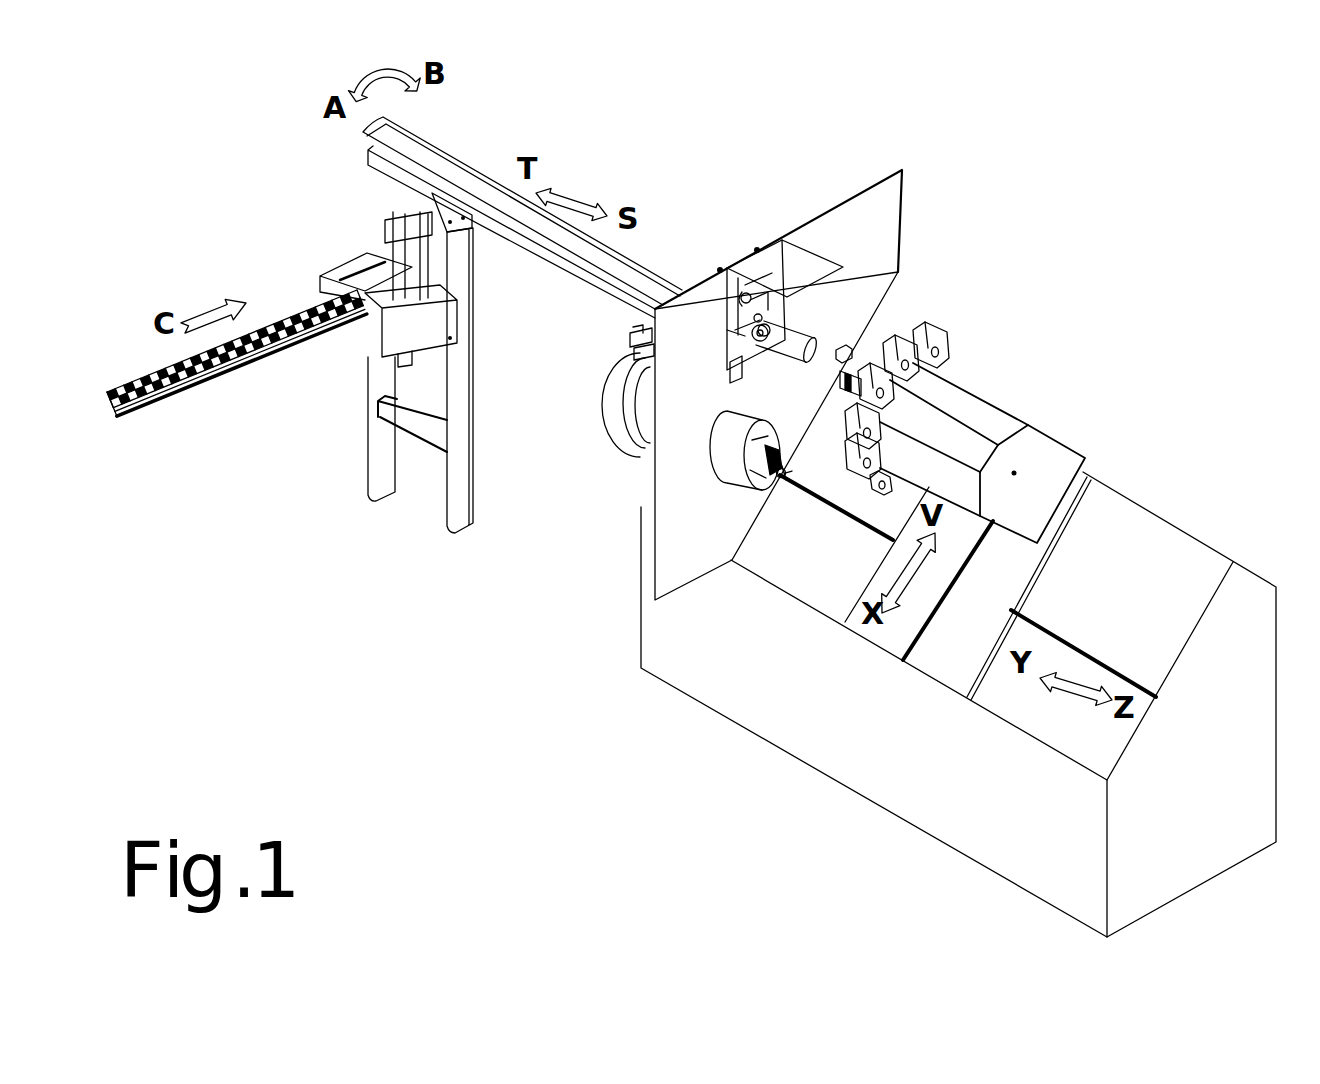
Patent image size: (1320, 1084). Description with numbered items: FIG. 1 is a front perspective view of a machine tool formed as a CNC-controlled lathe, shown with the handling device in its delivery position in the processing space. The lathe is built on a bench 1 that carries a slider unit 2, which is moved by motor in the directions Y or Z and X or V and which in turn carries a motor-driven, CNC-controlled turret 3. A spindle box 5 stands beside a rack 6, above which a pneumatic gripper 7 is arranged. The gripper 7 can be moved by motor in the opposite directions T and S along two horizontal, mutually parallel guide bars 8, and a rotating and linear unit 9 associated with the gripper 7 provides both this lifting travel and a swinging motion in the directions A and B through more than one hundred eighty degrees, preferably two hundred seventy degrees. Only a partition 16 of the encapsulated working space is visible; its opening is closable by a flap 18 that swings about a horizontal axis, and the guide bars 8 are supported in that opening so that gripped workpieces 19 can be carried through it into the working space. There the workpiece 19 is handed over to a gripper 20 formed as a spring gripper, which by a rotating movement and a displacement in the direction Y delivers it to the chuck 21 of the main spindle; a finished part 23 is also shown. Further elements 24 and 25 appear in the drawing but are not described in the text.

The bench 1 is at (1098, 568).
The slider unit 2 is at (957, 407).
The turret 3 is at (933, 363).
The spindle box 5 is at (612, 443).
The rack 6 is at (455, 532).
The gripper 7 is at (793, 338).
The guide bars 8 is at (381, 121).
The rotating and linear unit 9 is at (728, 272).
The partition 16 is at (682, 425).
The flap 18 is at (785, 262).
The workpiece 19 is at (845, 355).
The spring gripper 20 is at (870, 346).
The chuck 21 is at (725, 458).
The finished part 23 is at (774, 478).
The conveyor 24 is at (250, 352).
The transfer unit 25 is at (347, 280).